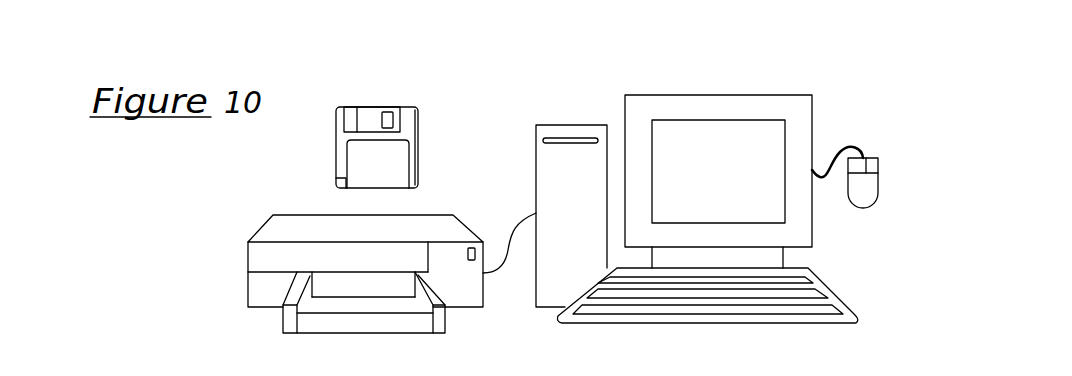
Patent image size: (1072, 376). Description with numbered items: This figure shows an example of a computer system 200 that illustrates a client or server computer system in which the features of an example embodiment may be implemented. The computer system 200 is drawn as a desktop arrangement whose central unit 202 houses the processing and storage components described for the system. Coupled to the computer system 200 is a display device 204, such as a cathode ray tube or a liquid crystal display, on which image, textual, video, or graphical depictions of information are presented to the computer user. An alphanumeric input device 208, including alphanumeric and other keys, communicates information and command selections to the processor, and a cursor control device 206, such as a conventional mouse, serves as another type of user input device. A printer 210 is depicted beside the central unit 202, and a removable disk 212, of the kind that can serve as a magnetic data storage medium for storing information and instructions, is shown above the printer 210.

The computer system 200 is at (819, 80).
The computer tower / processing unit 202 is at (540, 194).
The display device 204 is at (771, 181).
The cursor control device 206 is at (908, 186).
The alphanumeric input device 208 is at (761, 295).
The printer 210 is at (313, 270).
The floppy disk / removable storage medium 212 is at (334, 147).